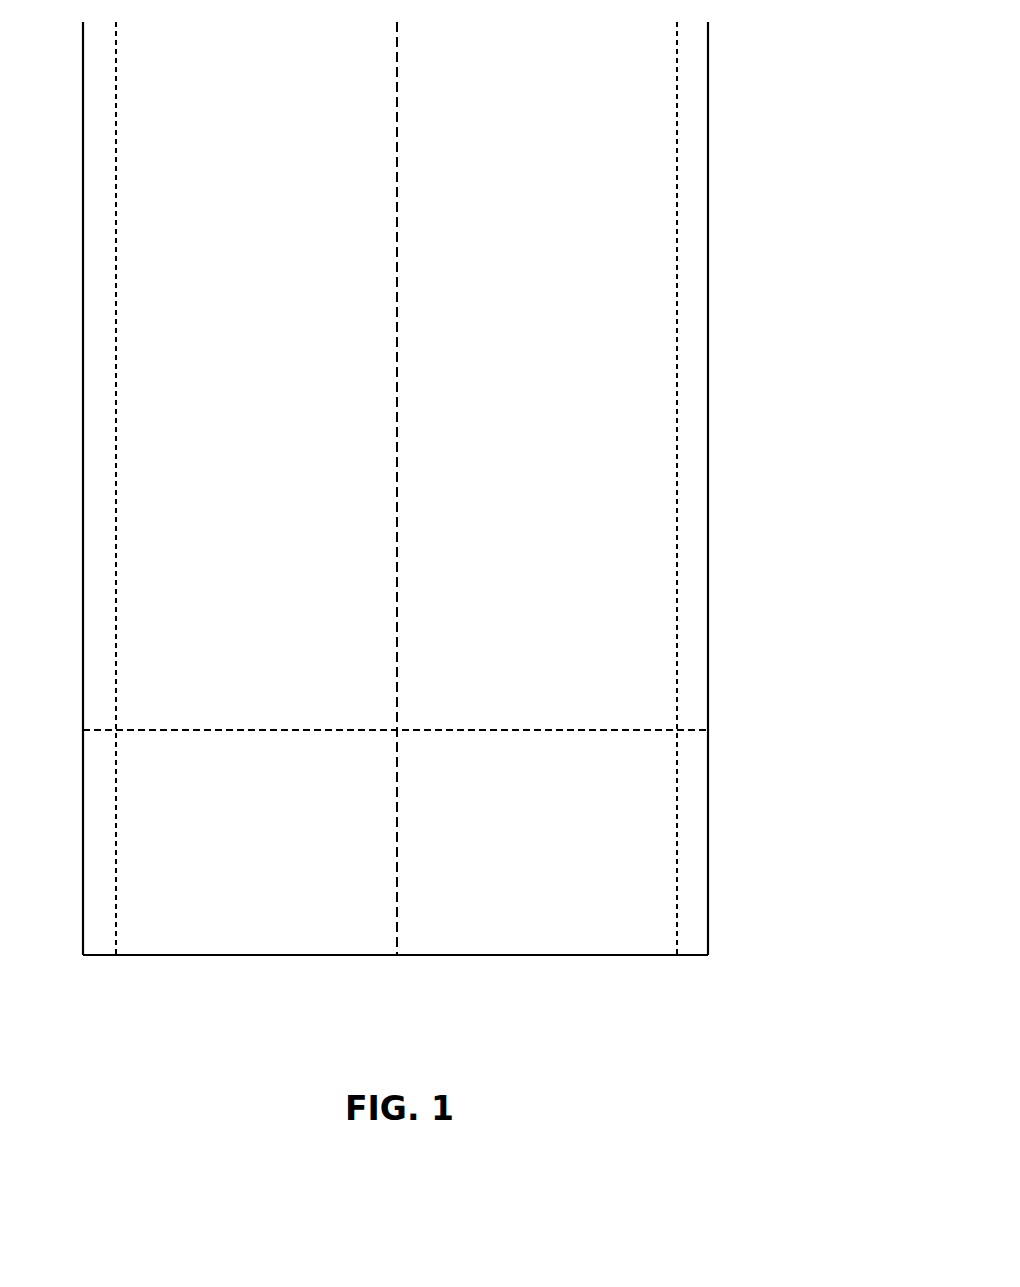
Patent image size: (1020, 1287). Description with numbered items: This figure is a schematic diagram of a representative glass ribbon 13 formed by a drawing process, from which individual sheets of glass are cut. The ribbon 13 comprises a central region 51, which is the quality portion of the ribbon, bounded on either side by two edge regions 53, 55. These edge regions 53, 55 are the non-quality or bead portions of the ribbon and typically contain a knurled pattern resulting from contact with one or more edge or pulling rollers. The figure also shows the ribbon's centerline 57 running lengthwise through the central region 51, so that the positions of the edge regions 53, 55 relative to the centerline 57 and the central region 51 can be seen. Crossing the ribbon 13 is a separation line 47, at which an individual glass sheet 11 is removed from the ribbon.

The glass sheet 11 is at (241, 848).
The glass ribbon 13 is at (727, 125).
The separation line 47 is at (466, 743).
The central region 51 is at (500, 940).
The edge region 53 is at (100, 942).
The edge region 55 is at (683, 942).
The centerline 57 is at (410, 163).